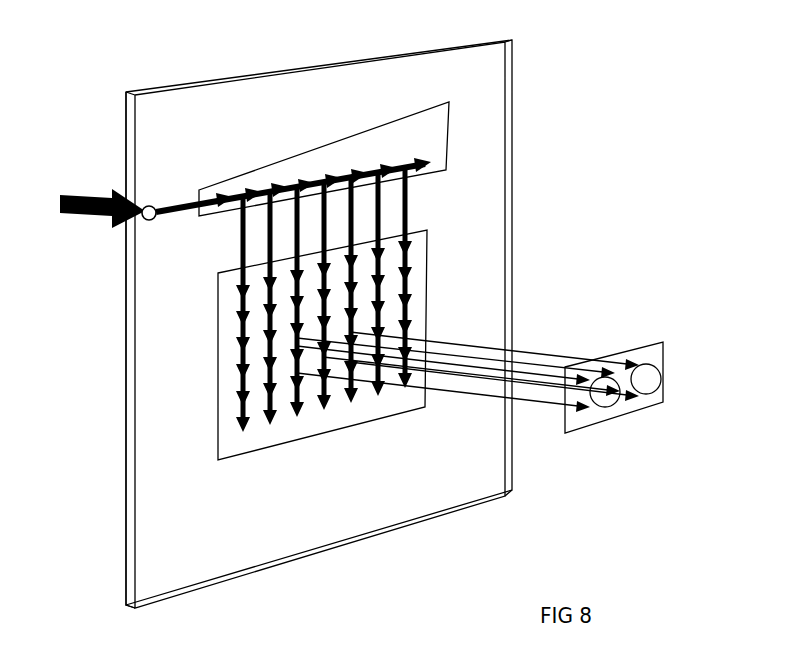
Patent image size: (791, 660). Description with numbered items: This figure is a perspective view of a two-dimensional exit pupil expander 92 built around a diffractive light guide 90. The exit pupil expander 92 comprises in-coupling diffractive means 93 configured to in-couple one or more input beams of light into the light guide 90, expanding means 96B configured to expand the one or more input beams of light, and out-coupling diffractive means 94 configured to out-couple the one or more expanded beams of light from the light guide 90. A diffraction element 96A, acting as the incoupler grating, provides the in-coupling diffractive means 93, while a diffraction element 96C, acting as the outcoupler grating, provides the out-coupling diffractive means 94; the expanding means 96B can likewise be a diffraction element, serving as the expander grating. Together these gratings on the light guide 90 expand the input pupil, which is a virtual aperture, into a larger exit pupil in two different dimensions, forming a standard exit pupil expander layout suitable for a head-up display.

The light guide 90 is at (210, 82).
The exit pupil expander 92 is at (119, 397).
The in-coupling diffractive means 93 is at (155, 218).
The diffraction element 96A is at (145, 220).
The expanding means 96B is at (438, 173).
The out-coupling diffractive means 94 is at (308, 433).
The diffraction element 96C is at (393, 413).